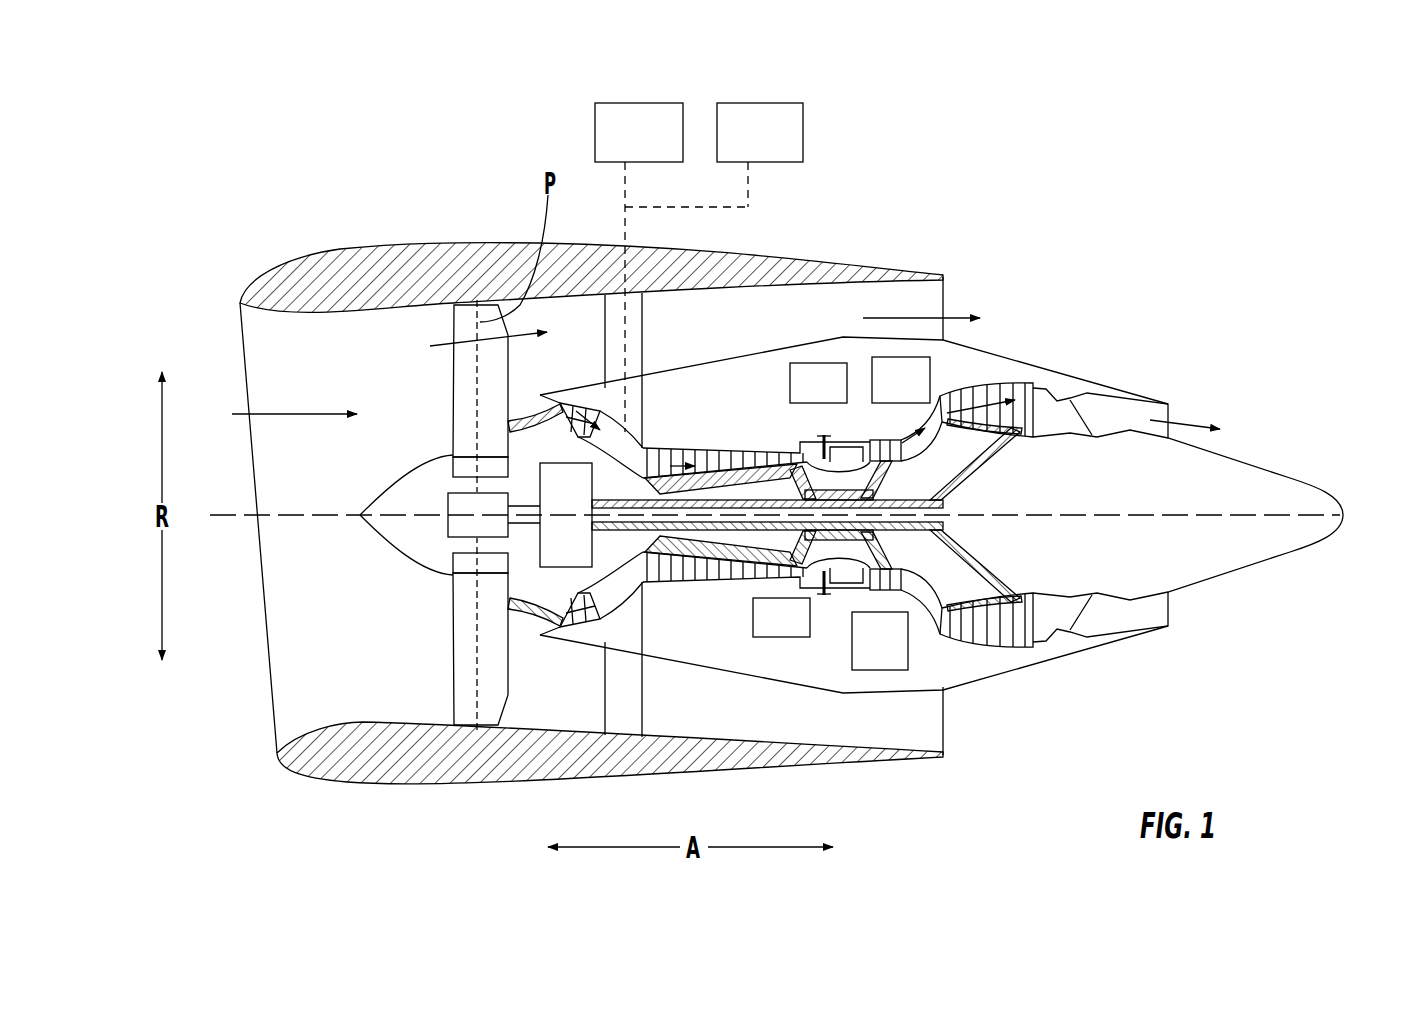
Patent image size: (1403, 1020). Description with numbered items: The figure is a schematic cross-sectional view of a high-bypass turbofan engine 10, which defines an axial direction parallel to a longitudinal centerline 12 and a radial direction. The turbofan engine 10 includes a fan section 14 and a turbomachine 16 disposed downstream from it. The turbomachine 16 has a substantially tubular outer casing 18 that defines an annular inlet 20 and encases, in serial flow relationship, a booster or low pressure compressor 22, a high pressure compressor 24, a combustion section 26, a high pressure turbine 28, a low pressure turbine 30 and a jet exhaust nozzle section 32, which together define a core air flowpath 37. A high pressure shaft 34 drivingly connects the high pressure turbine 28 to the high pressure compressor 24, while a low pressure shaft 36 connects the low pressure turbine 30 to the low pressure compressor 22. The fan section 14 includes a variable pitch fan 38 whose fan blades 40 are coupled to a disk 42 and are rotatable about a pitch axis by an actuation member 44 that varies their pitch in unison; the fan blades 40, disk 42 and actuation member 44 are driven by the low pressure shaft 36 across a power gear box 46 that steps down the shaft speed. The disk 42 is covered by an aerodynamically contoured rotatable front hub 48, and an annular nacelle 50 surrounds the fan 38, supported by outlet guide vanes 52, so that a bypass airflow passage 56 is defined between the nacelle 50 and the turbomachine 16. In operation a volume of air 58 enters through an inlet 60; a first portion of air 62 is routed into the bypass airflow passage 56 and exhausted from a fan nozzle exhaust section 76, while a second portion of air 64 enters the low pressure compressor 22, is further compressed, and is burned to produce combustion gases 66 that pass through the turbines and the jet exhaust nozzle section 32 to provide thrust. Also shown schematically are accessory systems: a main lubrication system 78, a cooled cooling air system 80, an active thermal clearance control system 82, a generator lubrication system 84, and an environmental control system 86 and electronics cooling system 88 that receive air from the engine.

The turbofan engine 10 is at (1087, 260).
The longitudinal centerline 12 is at (1108, 515).
The fan section 14 is at (410, 330).
The turbomachine 16 is at (762, 397).
The outer casing 18 is at (800, 677).
The annular inlet 20 is at (553, 622).
The low pressure compressor 22 is at (597, 597).
The high pressure compressor 24 is at (672, 572).
The combustion section 26 is at (843, 577).
The high pressure turbine 28 is at (905, 588).
The low pressure turbine 30 is at (1025, 632).
The jet exhaust nozzle section 32 is at (1087, 623).
The high pressure shaft 34 is at (875, 483).
The low pressure shaft 36 is at (967, 477).
The core air flowpath 37 is at (627, 577).
The variable pitch fan 38 is at (417, 568).
The fan blades 40 is at (450, 665).
The disk 42 is at (468, 468).
The actuation member 44 is at (453, 497).
The power gear box 46 is at (577, 480).
The front hub 48 is at (375, 530).
The nacelle 50 is at (500, 790).
The outlet guide vanes 52 is at (643, 323).
The bypass airflow passage 56 is at (800, 336).
The volume of air 58 is at (292, 412).
The inlet 60 is at (270, 728).
The first portion of air 62 is at (467, 345).
The second portion of air 64 is at (530, 407).
The combustion gases 66 is at (987, 395).
The fan nozzle exhaust section 76 is at (932, 302).
The main lubrication system 78 is at (908, 657).
The cooled cooling air system 80 is at (777, 637).
The active thermal clearance control system 82 is at (872, 357).
The generator lubrication system 84 is at (815, 362).
The environmental control system 86 is at (650, 103).
The electronics cooling system 88 is at (774, 103).